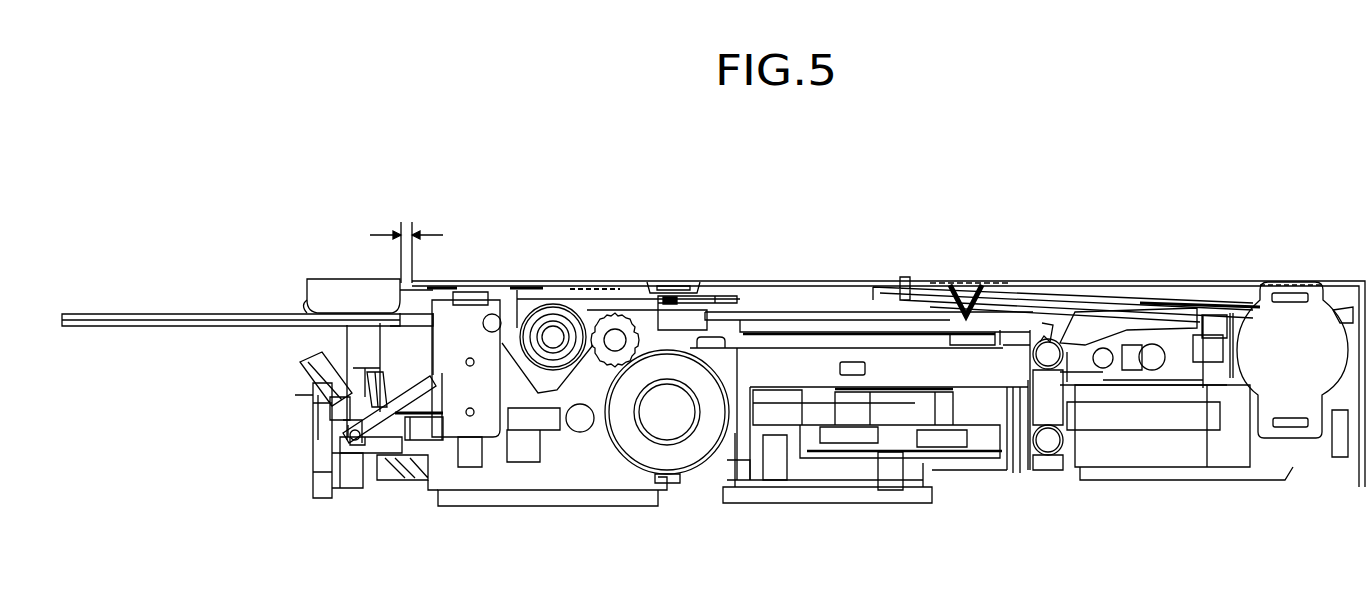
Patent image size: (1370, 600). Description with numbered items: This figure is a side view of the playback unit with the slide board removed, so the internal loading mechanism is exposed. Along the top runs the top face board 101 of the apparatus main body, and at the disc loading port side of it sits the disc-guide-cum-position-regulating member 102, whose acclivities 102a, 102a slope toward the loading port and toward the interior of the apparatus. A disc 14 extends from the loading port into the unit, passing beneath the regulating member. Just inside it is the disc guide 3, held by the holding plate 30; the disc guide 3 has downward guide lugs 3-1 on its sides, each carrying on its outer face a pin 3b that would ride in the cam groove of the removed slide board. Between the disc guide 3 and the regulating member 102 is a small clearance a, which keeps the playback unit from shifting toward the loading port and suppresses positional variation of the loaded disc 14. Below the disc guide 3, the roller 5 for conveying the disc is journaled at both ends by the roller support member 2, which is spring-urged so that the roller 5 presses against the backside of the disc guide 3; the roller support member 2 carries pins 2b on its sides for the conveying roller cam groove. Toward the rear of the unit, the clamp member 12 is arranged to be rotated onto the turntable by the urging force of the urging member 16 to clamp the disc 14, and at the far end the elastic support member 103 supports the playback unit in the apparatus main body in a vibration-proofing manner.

The top face board 101 is at (803, 281).
The disc 14 is at (122, 314).
The disc-guide-cum-position-regulating member 102 is at (353, 290).
The acclivity 102a is at (307, 308).
The clearance a is at (405, 222).
The disc guide 3 is at (423, 313).
The roller support member 2 is at (418, 455).
The holding plate 30 is at (465, 312).
The downward guide lug 3-1 is at (493, 314).
The pin 3b is at (512, 290).
The roller 5 is at (567, 318).
The pin 2b is at (580, 418).
The clamp member 12 is at (1122, 297).
The urging member 16 is at (1047, 412).
The elastic support member 103 is at (1292, 333).